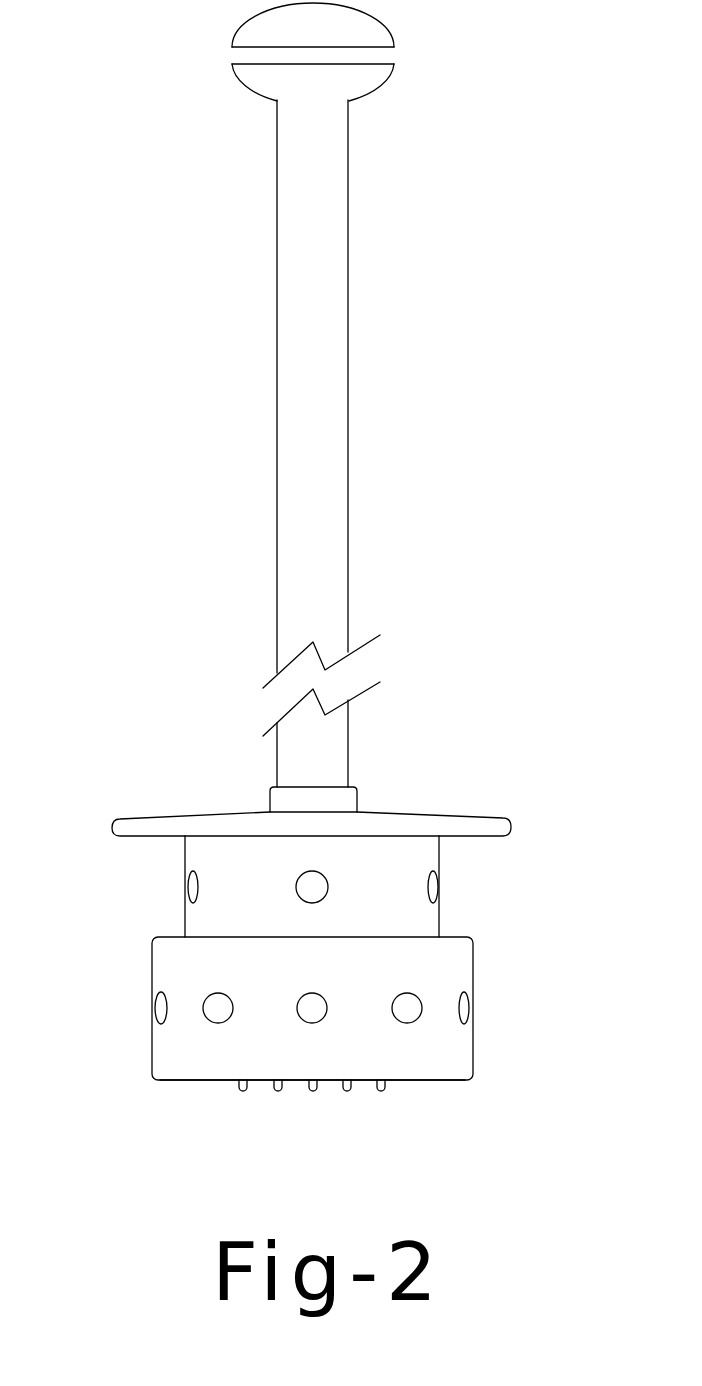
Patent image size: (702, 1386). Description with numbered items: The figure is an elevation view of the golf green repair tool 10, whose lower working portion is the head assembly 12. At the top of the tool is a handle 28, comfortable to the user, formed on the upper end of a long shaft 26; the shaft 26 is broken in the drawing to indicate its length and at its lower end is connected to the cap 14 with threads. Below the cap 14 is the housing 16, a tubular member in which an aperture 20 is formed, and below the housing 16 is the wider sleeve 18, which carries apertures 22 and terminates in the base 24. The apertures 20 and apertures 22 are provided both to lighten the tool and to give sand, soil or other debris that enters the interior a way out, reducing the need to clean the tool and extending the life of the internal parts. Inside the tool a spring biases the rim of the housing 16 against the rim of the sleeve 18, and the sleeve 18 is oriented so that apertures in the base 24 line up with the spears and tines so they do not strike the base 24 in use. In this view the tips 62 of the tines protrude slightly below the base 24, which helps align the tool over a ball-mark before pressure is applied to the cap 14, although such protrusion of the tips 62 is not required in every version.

The golf green repair tool 10 is at (203, 402).
The head assembly 12 is at (438, 917).
The cap 14 is at (446, 827).
The housing 16 is at (433, 858).
The sleeve 18 is at (453, 978).
The aperture 20 is at (305, 887).
The aperture 22 is at (208, 1008).
The base 24 is at (445, 1080).
The shaft 26 is at (338, 748).
The handle 28 is at (343, 80).
The tip 62 is at (243, 1085).